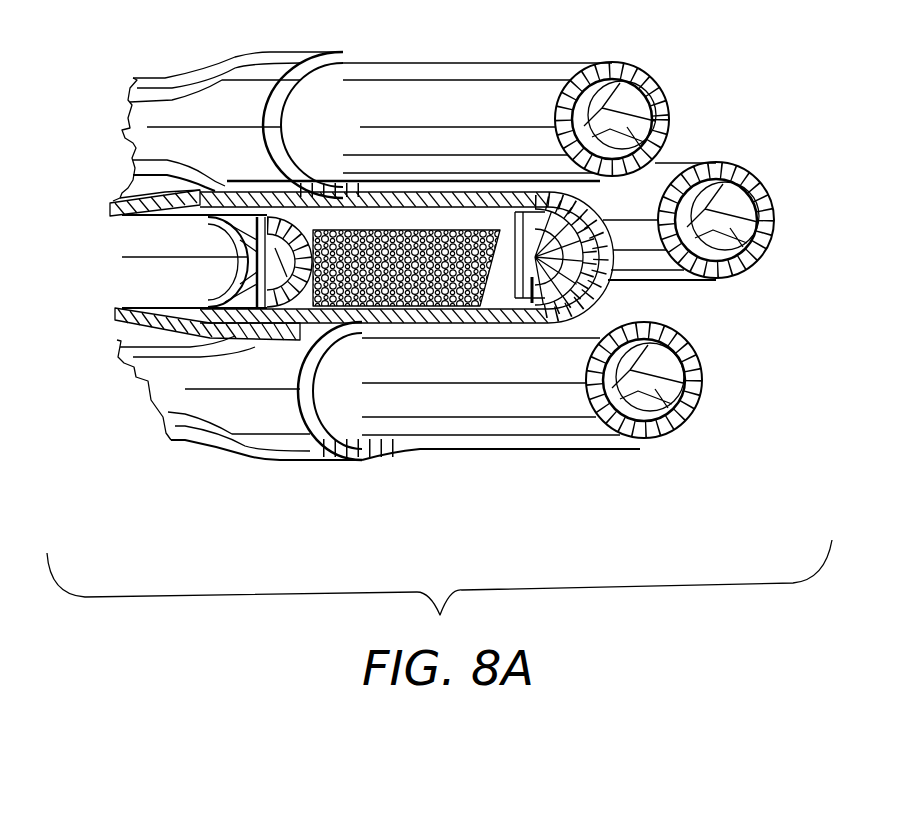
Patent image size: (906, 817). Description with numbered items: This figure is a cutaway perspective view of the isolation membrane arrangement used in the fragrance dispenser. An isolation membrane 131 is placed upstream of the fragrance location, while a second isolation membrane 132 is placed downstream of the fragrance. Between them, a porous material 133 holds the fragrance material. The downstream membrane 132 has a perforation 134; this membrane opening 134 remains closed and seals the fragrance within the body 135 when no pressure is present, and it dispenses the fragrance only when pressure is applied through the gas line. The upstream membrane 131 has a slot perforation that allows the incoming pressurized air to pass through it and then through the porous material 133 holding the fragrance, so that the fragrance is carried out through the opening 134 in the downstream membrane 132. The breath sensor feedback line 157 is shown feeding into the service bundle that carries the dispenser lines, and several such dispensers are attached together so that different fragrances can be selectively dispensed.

The isolation membrane 131 is at (122, 257).
The isolation membrane 132 is at (533, 277).
The porous material 133 is at (397, 310).
The perforation 134 is at (565, 286).
The body 135 is at (447, 204).
The breath sensor feedback line 157 is at (285, 195).